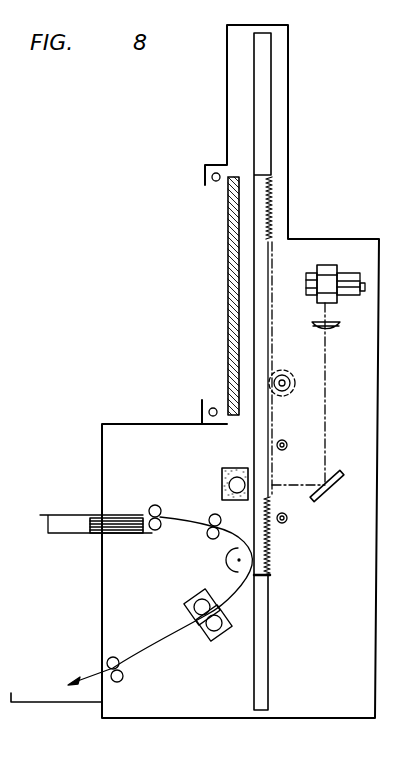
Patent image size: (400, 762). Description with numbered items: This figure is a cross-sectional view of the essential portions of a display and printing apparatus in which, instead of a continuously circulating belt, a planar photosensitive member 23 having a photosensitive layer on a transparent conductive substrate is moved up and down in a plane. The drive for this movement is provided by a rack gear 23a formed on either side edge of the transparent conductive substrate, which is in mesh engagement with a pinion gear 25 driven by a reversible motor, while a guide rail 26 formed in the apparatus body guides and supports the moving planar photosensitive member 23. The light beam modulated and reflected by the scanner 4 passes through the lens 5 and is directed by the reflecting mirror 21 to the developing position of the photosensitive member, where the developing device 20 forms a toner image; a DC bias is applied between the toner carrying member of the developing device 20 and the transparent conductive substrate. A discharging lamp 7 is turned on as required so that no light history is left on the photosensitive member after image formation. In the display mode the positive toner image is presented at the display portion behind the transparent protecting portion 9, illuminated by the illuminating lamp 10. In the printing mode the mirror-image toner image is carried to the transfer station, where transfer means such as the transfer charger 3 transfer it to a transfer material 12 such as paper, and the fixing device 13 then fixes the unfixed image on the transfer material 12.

The transfer charger 3 is at (230, 556).
The scanner 4 is at (330, 265).
The lens 5 is at (341, 328).
The discharging lamp 7 is at (285, 451).
The transparent protecting portion 9 is at (228, 312).
The illuminating lamp 10 is at (212, 181).
The transfer material 12 is at (100, 519).
The fixing device 13 is at (222, 642).
The developing device 20 is at (222, 482).
The reflecting mirror 21 is at (323, 495).
The planar photosensitive member 23 is at (271, 545).
The rack gear 23a is at (272, 198).
The pinion gear 25 is at (284, 370).
The guide rail 26 is at (270, 75).